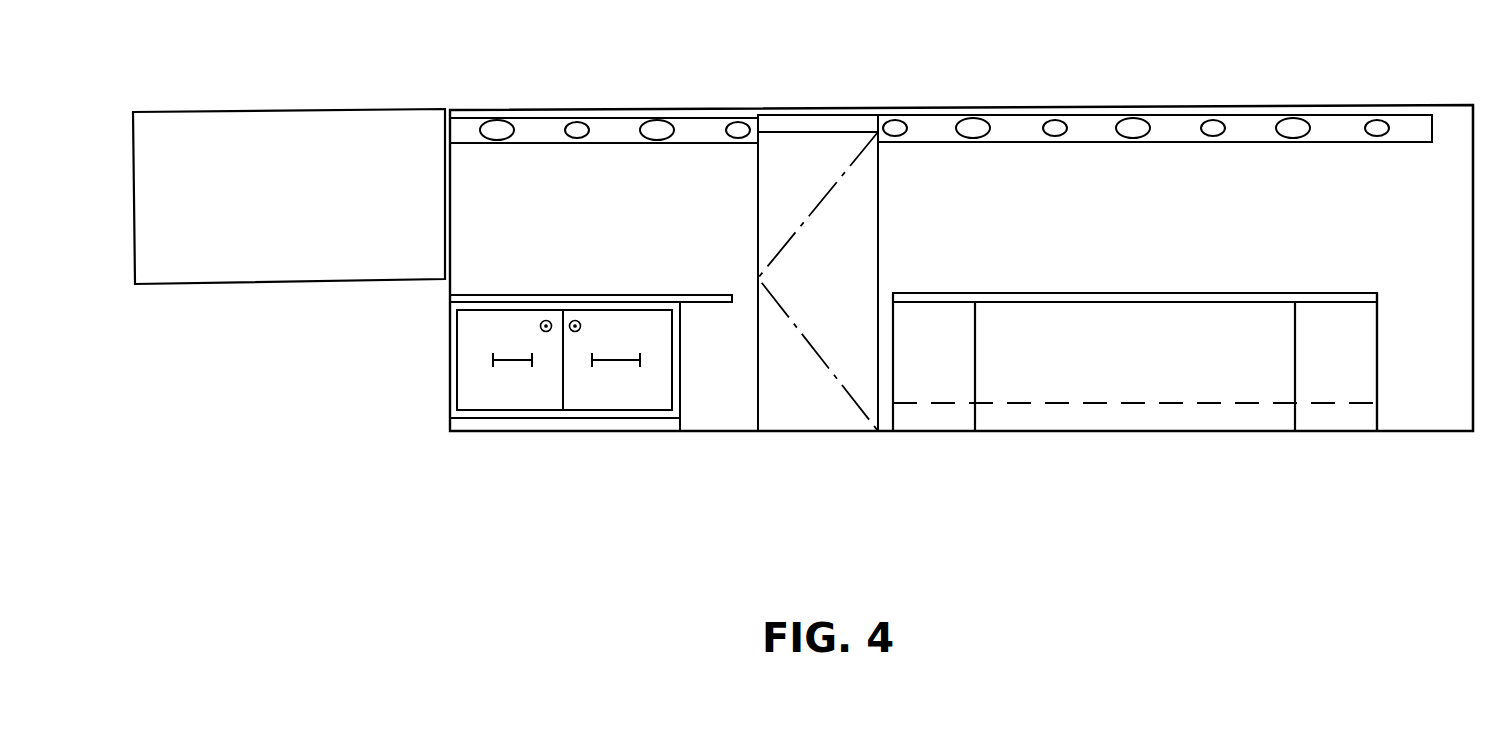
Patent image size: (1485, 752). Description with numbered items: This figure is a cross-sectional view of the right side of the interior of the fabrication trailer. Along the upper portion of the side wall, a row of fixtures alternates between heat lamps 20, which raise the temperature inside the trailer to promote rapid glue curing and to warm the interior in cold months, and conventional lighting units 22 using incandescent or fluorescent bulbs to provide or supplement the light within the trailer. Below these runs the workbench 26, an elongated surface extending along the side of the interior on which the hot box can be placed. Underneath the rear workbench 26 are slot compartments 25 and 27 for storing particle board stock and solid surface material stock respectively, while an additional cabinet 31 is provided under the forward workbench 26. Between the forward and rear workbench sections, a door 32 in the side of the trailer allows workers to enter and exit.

The heat lamp 20 is at (497, 130).
The lighting unit 22 is at (577, 130).
The slot compartment 25 is at (1377, 370).
The workbench 26 is at (1335, 293).
The slot compartment 27 is at (1297, 353).
The cabinet 31 is at (640, 393).
The door 32 is at (817, 395).